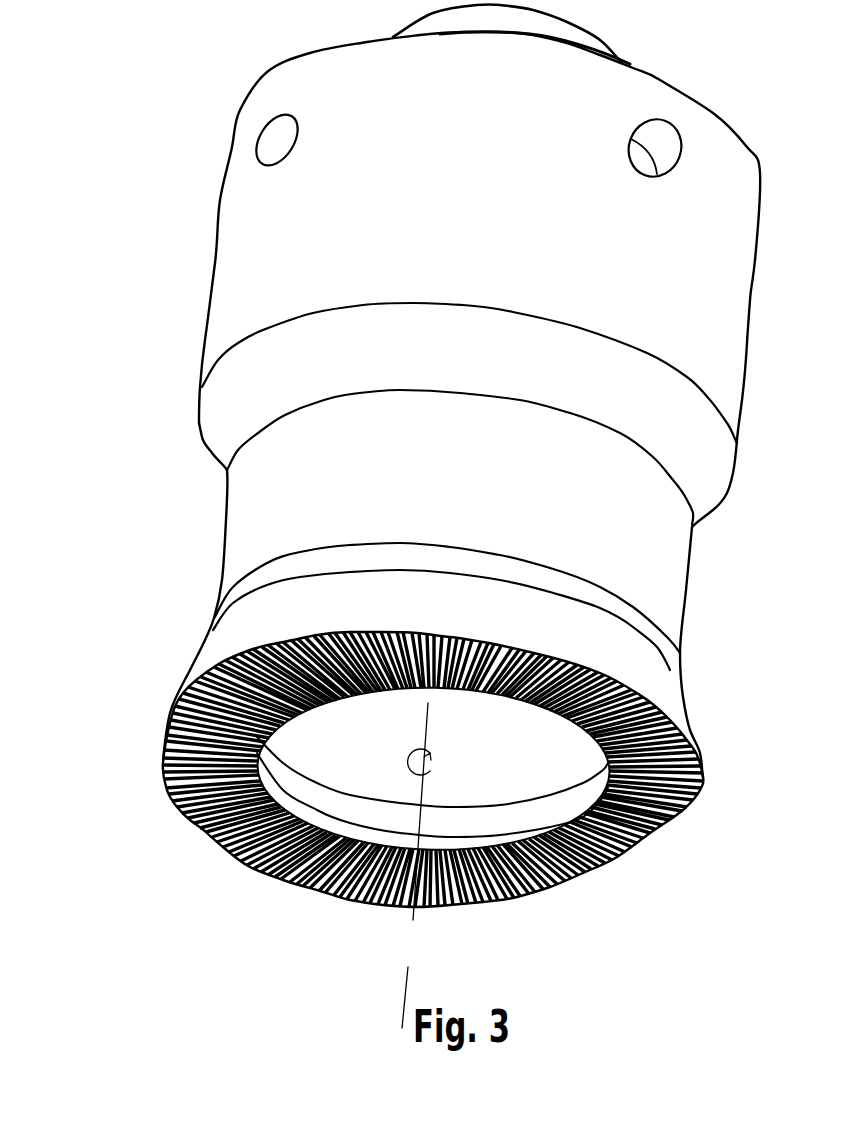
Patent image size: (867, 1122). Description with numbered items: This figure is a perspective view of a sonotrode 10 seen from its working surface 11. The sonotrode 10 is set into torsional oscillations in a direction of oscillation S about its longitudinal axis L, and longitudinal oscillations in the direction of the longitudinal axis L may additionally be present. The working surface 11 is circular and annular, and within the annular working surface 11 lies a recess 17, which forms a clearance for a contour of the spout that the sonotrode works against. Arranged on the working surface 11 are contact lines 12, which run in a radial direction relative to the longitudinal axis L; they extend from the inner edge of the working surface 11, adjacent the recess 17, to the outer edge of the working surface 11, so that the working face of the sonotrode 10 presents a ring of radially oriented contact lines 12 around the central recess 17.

The sonotrode 10 is at (233, 270).
The working surface 11 is at (317, 880).
The contact lines 12 is at (553, 867).
The recess 17 is at (327, 730).
The longitudinal axis L is at (426, 865).
The direction of oscillation S is at (438, 768).